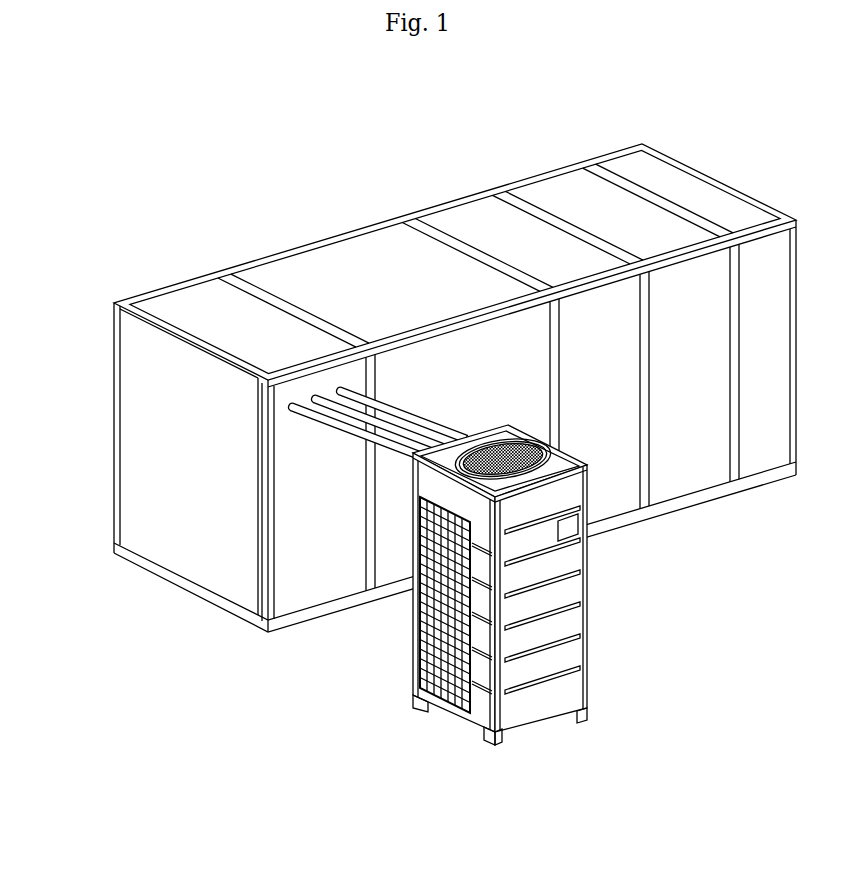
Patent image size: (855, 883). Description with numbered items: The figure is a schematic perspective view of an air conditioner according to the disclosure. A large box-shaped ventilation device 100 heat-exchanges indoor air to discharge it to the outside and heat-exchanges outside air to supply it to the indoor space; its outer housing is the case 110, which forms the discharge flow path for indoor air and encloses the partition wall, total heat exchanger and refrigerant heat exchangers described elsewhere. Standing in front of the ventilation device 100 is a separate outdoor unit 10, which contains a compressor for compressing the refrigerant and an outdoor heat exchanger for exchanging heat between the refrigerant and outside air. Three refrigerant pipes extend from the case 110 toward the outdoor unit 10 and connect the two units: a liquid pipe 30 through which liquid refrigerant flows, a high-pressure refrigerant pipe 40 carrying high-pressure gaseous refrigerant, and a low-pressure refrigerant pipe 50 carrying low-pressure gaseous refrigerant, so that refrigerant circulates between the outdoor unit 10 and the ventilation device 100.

The outdoor unit 10 is at (613, 659).
The liquid pipe 30 is at (343, 412).
The high-pressure refrigerant pipe 40 is at (395, 416).
The low-pressure refrigerant pipe 50 is at (345, 437).
The ventilation device 100 is at (162, 278).
The case 110 is at (202, 545).